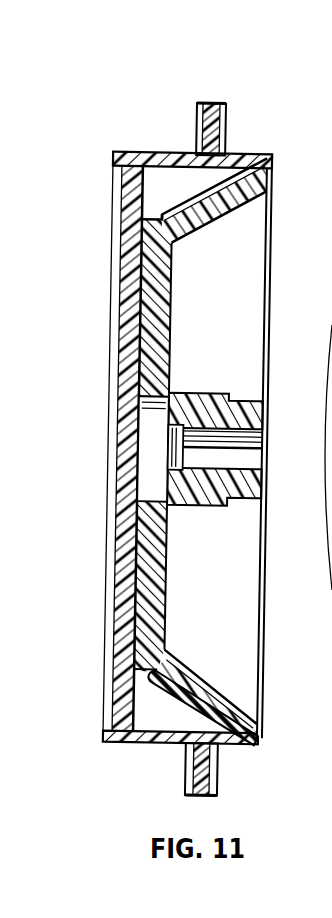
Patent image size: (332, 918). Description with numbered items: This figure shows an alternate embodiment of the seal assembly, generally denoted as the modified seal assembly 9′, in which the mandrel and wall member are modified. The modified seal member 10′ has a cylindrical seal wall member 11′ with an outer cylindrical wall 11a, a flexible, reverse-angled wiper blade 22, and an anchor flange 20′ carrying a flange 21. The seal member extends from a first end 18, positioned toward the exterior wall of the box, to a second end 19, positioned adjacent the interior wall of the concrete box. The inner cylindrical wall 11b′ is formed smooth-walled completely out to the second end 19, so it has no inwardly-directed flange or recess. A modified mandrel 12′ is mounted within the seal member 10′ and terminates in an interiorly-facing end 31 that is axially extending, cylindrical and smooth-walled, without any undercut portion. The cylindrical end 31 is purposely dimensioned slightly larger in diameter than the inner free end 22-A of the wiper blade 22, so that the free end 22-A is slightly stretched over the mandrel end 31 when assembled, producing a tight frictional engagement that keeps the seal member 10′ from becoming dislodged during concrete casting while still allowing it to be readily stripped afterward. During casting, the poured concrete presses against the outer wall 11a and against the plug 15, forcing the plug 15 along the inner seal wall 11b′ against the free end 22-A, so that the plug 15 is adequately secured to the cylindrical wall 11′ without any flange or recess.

The outer cylindrical wall 11a is at (168, 213).
The inner free end of wiper blade 22-A is at (158, 218).
The wiper blade 22 is at (190, 210).
The flange 21 is at (210, 110).
The anchor flange 20′ is at (224, 118).
The cylindrical seal wall member 11′ is at (260, 141).
The modified seal assembly 9′ is at (288, 175).
The inner cylindrical wall 11b′ is at (230, 217).
The interiorly-facing end of mandrel 31 is at (158, 208).
The plug 15 is at (120, 246).
The modified mandrel 12′ is at (168, 627).
The first end 18 is at (262, 693).
The modified seal member 10′ is at (250, 764).
The second end 19 is at (98, 737).